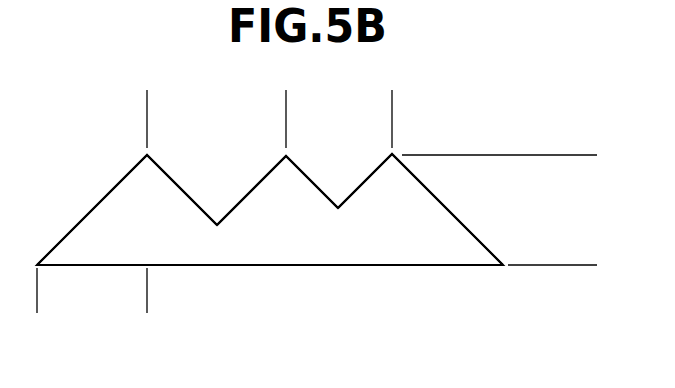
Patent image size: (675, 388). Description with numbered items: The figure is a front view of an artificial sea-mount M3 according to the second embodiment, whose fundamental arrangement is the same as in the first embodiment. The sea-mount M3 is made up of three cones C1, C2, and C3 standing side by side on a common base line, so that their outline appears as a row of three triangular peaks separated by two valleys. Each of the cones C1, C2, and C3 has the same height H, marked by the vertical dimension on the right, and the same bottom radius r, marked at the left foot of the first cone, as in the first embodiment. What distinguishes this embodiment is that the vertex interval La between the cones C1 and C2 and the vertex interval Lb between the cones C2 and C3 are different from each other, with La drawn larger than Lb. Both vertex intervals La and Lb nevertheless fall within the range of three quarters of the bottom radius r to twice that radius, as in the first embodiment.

The artificial sea-mount M3 is at (292, 288).
The cone C1 is at (100, 203).
The cone C2 is at (242, 200).
The cone C3 is at (362, 185).
The vertex interval La is at (286, 108).
The vertex interval Lb is at (286, 108).
The height H is at (578, 155).
The bottom radius r is at (37, 296).